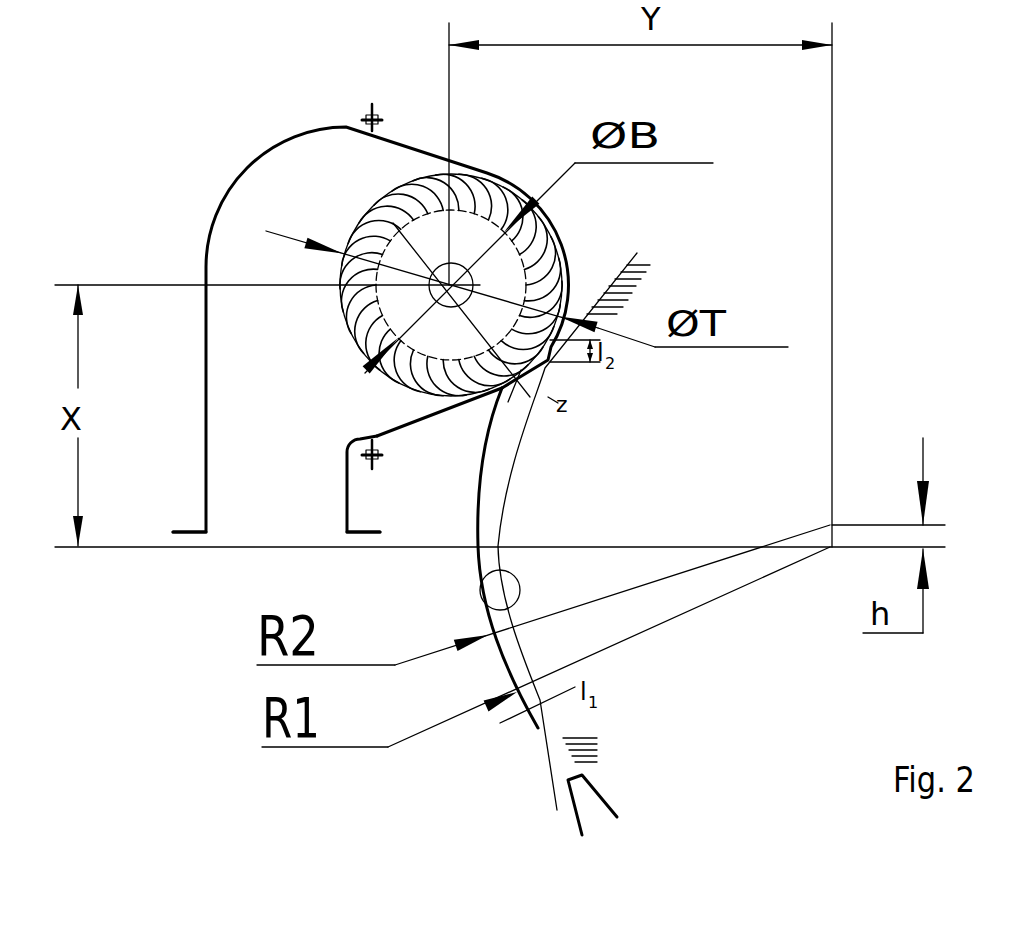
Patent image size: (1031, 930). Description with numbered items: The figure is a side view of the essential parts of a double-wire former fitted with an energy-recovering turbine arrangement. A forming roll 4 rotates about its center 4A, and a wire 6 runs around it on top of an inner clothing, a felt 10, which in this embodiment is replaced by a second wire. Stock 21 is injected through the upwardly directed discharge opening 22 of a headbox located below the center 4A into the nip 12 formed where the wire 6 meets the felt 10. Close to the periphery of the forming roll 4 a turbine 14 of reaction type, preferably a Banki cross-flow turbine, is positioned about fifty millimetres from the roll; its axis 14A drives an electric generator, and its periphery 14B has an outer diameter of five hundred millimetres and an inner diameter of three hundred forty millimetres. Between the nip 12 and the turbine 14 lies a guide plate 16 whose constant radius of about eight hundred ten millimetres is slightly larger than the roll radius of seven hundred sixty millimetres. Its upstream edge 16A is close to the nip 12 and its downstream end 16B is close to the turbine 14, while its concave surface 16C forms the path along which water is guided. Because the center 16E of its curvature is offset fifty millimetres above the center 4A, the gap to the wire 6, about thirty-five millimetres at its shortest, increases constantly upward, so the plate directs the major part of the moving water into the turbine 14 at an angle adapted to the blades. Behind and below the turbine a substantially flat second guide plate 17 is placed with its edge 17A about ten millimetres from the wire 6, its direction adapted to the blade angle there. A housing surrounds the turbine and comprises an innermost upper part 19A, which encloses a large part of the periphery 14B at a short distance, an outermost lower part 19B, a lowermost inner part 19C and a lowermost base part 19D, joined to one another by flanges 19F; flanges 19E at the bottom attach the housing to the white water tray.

The forming roll 4 is at (725, 448).
The axis of the forming roll 4A is at (835, 547).
The wire 6 is at (637, 258).
The felt 10 is at (620, 285).
The nip 12 is at (548, 746).
The turbine 14 is at (330, 327).
The axis of the turbine 14A is at (393, 223).
The periphery of the turbine 14B is at (365, 373).
The guide plate 16 is at (470, 522).
The upstream edge of the guide plate 16A is at (537, 727).
The downstream end of the guide plate 16B is at (497, 388).
The concave surface of the guide plate 16C is at (395, 665).
The center of curvature of the guide plate 16E is at (832, 525).
The second guide plate 17 is at (553, 354).
The edge of the second guide plate 17A is at (548, 364).
The innermost upper part of the housing 19A is at (468, 167).
The outermost lower part of the housing 19B is at (206, 452).
The lowermost inner part of the housing 19C is at (397, 437).
The lowermost base part of the housing 19D is at (347, 498).
The flanges for attachment to the white water tray 19E is at (360, 535).
The flanges 19F is at (378, 105).
The stock 21 is at (563, 763).
The discharge opening 22 is at (590, 816).